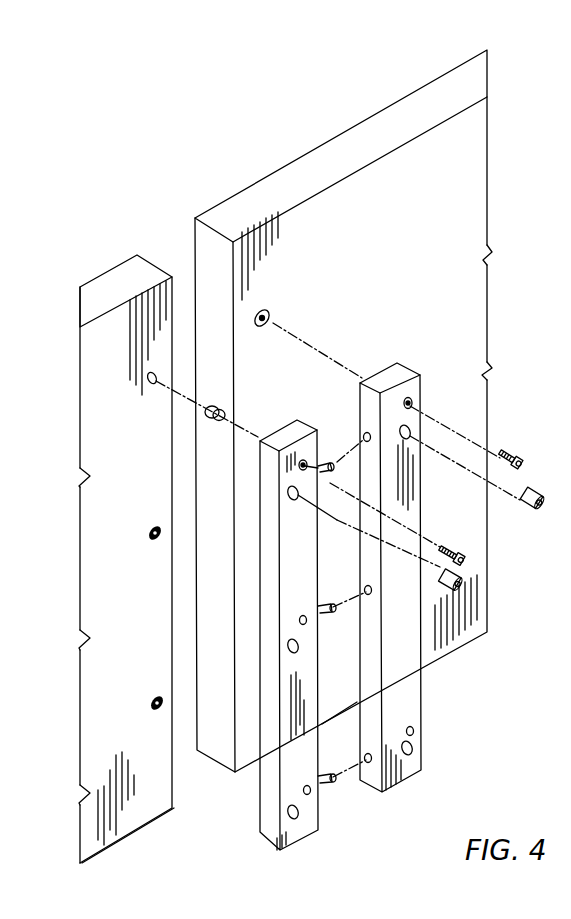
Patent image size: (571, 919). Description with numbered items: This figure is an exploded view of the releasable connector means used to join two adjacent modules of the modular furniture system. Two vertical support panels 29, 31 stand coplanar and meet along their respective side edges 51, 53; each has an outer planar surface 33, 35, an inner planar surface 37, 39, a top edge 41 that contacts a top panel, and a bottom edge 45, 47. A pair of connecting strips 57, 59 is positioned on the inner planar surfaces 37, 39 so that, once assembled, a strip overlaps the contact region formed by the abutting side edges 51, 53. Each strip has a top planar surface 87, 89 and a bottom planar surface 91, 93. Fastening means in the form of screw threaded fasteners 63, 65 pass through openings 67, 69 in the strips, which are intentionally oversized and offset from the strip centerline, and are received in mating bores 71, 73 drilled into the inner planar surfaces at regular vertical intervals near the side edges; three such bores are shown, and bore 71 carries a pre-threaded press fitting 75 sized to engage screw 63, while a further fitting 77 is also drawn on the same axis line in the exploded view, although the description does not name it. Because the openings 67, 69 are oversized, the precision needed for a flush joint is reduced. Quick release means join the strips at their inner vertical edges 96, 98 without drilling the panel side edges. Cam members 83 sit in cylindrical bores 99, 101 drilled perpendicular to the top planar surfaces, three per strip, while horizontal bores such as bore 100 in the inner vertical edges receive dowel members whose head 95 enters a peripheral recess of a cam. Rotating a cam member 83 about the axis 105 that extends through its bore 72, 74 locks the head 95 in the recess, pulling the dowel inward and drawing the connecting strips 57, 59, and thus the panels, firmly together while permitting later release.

The vertical support panel 29 is at (291, 144).
The vertical support panel 31 is at (70, 283).
The outer planar surface 33 is at (100, 273).
The outer planar surface 35 is at (256, 183).
The inner planar surface 37 is at (100, 333).
The inner planar surface 39 is at (478, 136).
The top edge 41 is at (457, 90).
The bottom edge 45 is at (125, 840).
The bottom edge 47 is at (125, 275).
The side edge 51 is at (210, 247).
The side edge 53 is at (172, 302).
The connecting strip 57 is at (413, 366).
The connecting strip 59 is at (270, 455).
The screw threaded fastener 63 is at (515, 456).
The screw threaded fastener 65 is at (470, 565).
The opening 67 is at (412, 404).
The opening 69 is at (301, 469).
The mating bore 71 is at (270, 312).
The bore 72 is at (410, 436).
The mating bore 73 is at (148, 380).
The bore 74 is at (296, 500).
The pre-threaded press fitting 75 is at (256, 326).
The bushing 77 is at (206, 416).
The cam member 83 is at (540, 508).
The top planar surface 87 is at (408, 703).
The top planar surface 89 is at (293, 597).
The bottom planar surface 91 is at (358, 633).
The bottom planar surface 93 is at (318, 832).
The head 95 is at (332, 462).
The inner vertical edge 96 is at (412, 736).
The inner vertical edge 98 is at (317, 602).
The cylindrical bore 99 is at (420, 565).
The horizontal bore 100 is at (385, 782).
The cylindrical bore 101 is at (294, 654).
The axis 105 is at (445, 450).